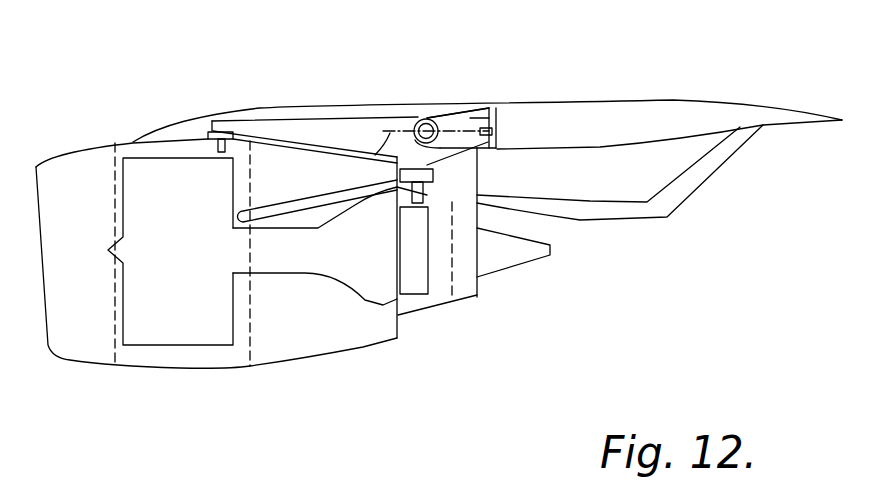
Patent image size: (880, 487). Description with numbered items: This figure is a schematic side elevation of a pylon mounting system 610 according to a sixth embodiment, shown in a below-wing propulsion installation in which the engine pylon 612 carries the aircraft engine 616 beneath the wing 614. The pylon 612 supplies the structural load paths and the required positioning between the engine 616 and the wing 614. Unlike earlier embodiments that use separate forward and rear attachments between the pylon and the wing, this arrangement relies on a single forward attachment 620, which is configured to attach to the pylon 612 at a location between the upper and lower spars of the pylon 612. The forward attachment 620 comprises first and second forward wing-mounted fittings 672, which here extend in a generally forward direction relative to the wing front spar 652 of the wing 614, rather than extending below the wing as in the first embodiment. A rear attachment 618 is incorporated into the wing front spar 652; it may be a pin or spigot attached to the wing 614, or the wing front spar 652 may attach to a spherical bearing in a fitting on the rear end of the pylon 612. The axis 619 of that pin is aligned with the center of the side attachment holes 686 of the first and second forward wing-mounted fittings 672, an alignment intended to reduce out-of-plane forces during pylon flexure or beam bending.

The pylon mounting system 610 is at (456, 102).
The engine pylon 612 is at (317, 130).
The wing 614 is at (697, 110).
The aircraft engine 616 is at (271, 274).
The rear attachment 618 is at (500, 145).
The axis of the pin 619 is at (390, 133).
The forward attachment 620 is at (453, 151).
The wing front spar 652 is at (480, 108).
The first and second forward wing-mounted fittings 672 is at (443, 139).
The side attachment holes 686 is at (419, 108).